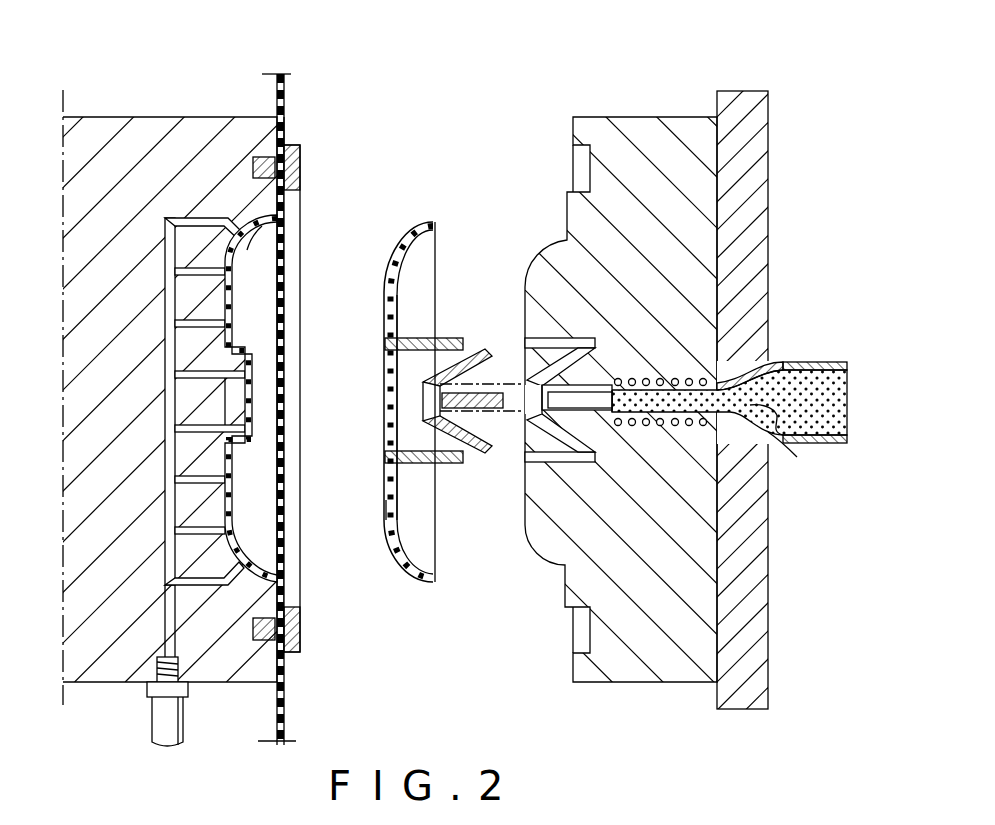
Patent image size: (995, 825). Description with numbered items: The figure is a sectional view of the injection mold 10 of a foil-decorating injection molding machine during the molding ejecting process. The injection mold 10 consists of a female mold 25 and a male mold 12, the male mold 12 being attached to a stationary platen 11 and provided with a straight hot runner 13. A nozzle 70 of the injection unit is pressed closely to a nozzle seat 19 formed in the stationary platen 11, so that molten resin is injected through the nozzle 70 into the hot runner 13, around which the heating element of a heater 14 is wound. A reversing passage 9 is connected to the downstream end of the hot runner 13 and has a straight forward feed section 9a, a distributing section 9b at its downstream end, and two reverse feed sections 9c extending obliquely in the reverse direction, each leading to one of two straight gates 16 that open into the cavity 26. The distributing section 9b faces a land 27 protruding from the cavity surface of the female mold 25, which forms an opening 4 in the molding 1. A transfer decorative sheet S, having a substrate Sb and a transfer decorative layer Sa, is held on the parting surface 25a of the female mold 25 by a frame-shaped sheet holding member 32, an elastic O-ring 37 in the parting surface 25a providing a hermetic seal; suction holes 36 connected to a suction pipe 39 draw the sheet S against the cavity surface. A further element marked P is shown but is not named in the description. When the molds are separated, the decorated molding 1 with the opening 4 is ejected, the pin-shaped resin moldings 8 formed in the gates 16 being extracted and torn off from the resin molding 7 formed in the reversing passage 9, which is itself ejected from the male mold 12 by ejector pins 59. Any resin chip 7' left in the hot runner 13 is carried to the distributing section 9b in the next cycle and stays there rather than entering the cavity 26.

The female mold 25 is at (112, 112).
The transfer decorative sheet S is at (275, 100).
The elastic O-ring 37 is at (256, 160).
The parting surface 25a is at (297, 118).
The sheet holding member 32 is at (301, 152).
The injection mold 10 is at (486, 108).
The male mold 12 is at (640, 112).
The stationary platen 11 is at (760, 117).
The molding 1 is at (407, 218).
The substrate Sb is at (250, 250).
The cavity 26 is at (235, 308).
The land 27 is at (235, 415).
The suction holes 36 is at (175, 428).
The suction pipe 39 is at (165, 722).
The opening 4 is at (388, 378).
The preform shell P is at (412, 560).
The transfer decorative layer Sa is at (387, 540).
The pin-shaped resin moldings 8 is at (445, 345).
The ejector pins 59 is at (503, 388).
The resin molding 7 is at (482, 319).
The resin chip 7' is at (725, 378).
The straight gates 16 is at (556, 348).
The reversing passage 9 is at (594, 390).
The forward feed section 9a is at (578, 410).
The distributing section 9b is at (540, 410).
The reverse feed sections 9c is at (618, 377).
The hot runner 13 is at (725, 378).
The heater 14 is at (690, 426).
The nozzle seat 19 is at (782, 448).
The nozzle 70 is at (830, 361).